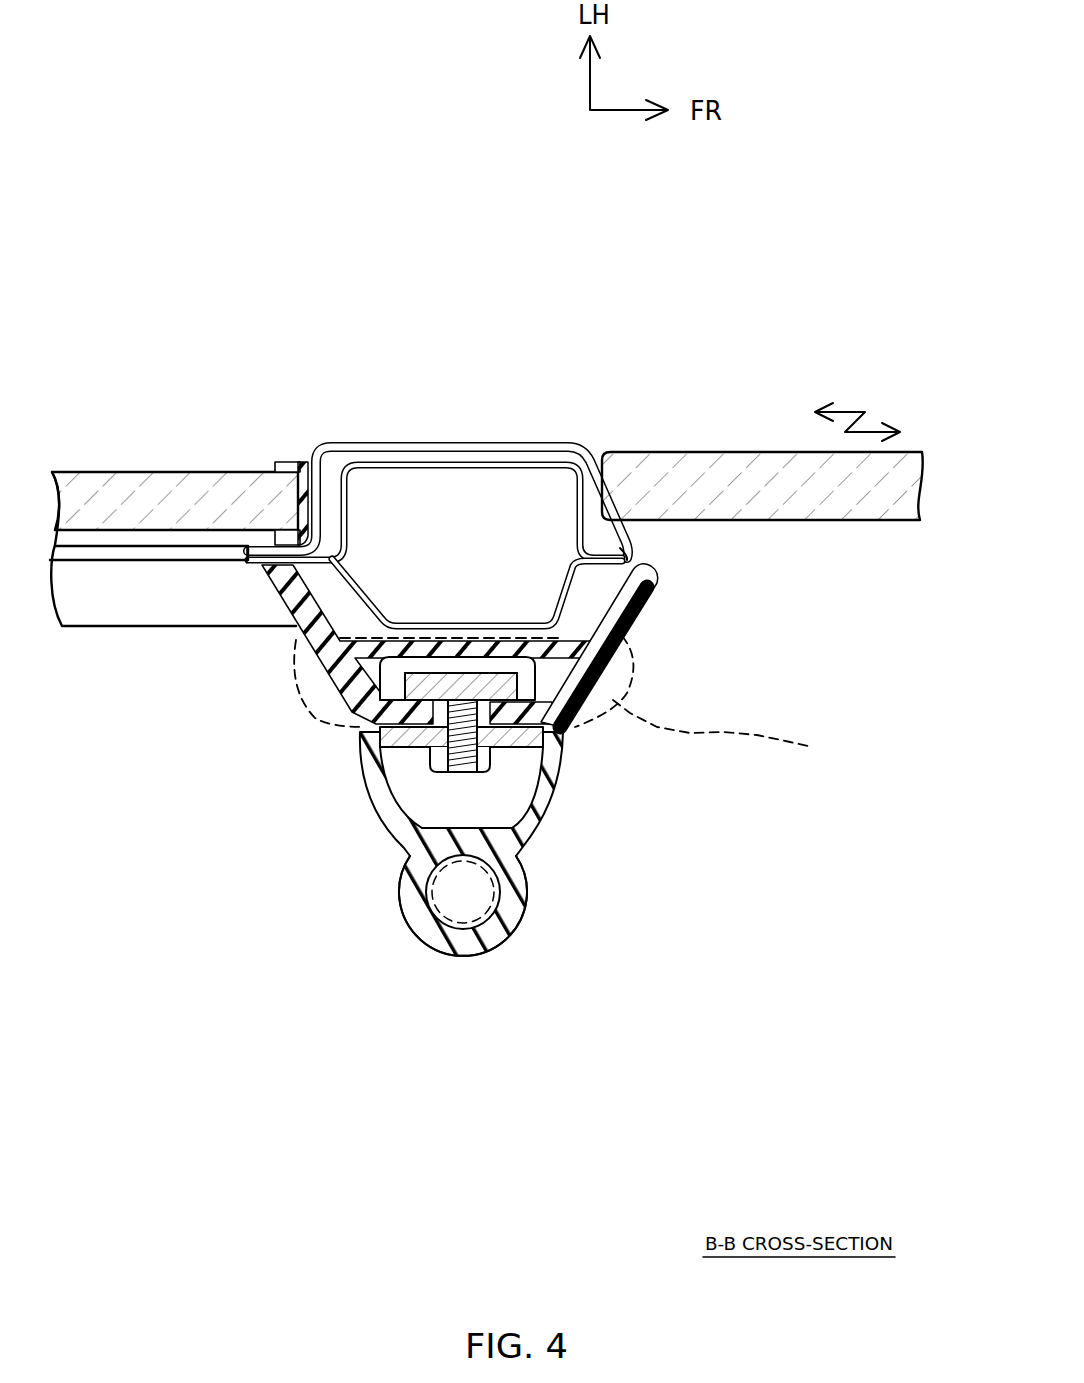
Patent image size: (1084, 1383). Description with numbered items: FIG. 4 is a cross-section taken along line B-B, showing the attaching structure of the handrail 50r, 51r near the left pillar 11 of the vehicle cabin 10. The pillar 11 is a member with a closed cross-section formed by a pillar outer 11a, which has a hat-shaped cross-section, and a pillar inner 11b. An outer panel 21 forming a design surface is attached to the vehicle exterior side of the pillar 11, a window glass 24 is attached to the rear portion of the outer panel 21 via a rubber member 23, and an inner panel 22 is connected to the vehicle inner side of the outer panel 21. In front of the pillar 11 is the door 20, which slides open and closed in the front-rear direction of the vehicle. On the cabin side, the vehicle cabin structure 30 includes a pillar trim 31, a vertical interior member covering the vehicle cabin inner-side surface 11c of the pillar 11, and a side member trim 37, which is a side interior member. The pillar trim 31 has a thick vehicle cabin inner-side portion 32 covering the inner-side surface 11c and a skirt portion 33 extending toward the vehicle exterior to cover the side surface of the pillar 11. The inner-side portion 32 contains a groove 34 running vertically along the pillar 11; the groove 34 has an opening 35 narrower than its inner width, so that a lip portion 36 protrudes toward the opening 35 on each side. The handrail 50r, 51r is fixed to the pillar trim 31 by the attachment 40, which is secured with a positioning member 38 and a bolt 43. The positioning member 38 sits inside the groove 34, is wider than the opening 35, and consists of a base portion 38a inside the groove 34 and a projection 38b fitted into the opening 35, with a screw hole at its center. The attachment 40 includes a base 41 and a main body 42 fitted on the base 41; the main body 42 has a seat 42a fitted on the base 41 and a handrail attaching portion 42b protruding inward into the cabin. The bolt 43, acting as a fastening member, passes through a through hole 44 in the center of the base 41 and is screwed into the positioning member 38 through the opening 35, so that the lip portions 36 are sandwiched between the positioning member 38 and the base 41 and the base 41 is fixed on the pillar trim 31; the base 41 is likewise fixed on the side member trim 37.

The vehicle cabin 10 is at (501, 694).
The pillar 11 is at (526, 425).
The pillar outer 11a is at (484, 386).
The pillar inner 11b is at (527, 452).
The vehicle cabin inner-side surface 11c is at (680, 595).
The door 20 is at (920, 452).
The outer panel 21 is at (526, 425).
The inner panel 22 is at (145, 637).
The rubber member 23 is at (272, 428).
The window glass 24 is at (175, 434).
The vehicle cabin structure 30 is at (550, 851).
The pillar trim 31 is at (554, 716).
The vehicle cabin inner-side portion 32 is at (572, 700).
The skirt portion 33 is at (627, 677).
The groove 34 is at (357, 680).
The opening 35 is at (601, 744).
The lip portion 36 is at (651, 778).
The side member trim 37 is at (173, 615).
The positioning member 38 is at (361, 766).
The base portion 38a is at (385, 726).
The projection 38b is at (222, 735).
The attachment 40 is at (536, 917).
The base 41 is at (584, 844).
The main body 42 is at (586, 954).
The seat 42a is at (559, 900).
The handrail attaching portion 42b is at (573, 948).
The bolt 43 is at (373, 873).
The through hole 44 is at (650, 848).
The handrail 50r is at (515, 975).
The rail rod 51r is at (483, 955).